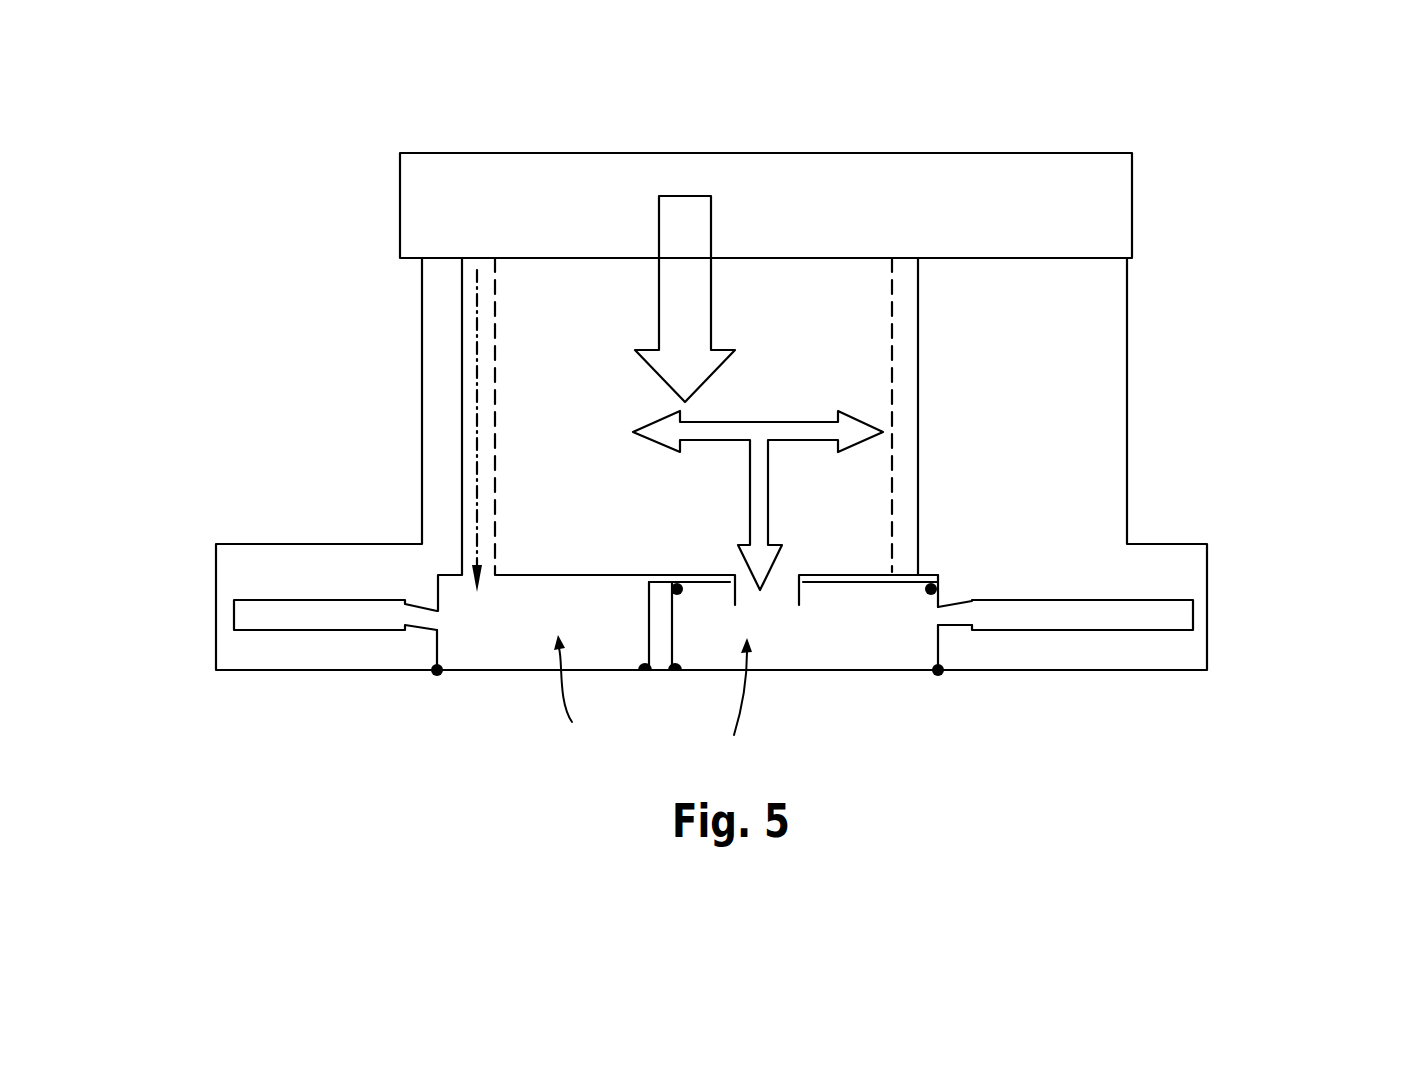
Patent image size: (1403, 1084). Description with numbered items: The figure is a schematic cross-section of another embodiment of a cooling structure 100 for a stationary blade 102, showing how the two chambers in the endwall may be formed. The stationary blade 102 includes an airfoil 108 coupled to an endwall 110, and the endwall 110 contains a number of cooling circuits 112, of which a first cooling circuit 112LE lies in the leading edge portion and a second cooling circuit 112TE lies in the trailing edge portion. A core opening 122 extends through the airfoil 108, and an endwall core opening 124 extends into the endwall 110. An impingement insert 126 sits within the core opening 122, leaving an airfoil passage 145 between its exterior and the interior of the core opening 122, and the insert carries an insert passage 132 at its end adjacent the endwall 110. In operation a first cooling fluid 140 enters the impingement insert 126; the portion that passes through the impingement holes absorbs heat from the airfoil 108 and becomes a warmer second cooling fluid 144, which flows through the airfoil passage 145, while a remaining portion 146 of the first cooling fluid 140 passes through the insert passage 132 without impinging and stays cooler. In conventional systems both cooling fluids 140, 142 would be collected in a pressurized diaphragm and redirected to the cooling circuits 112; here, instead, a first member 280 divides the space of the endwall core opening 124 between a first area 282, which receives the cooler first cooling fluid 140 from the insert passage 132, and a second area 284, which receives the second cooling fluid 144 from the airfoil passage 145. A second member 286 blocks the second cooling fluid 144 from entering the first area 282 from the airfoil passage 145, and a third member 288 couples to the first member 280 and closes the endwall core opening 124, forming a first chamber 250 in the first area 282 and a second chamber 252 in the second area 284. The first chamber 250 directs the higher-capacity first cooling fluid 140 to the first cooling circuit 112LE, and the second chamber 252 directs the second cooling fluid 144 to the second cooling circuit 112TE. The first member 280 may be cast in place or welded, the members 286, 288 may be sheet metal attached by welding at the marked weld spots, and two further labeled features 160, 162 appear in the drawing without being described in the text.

The cooling structure 100 is at (359, 501).
The stationary blade 102 is at (392, 112).
The airfoil 108 is at (1072, 362).
The endwall 110 is at (276, 563).
The cooling circuits 112 is at (710, 612).
The first cooling circuit 112LE is at (245, 611).
The second cooling circuit 112TE is at (1162, 613).
The core opening 122 is at (928, 301).
The endwall core opening 124 is at (940, 640).
The impingement insert 126 is at (912, 413).
The insert passage 132 is at (802, 595).
The first cooling fluid 140 is at (681, 222).
The cooling fluid 142 is at (1058, 223).
The second cooling fluid 144 is at (478, 400).
The airfoil passage 145 is at (905, 512).
The remaining portion of first cooling fluid 146 is at (762, 558).
The leading hinge point 160 is at (432, 621).
The trailing flap 162 is at (965, 613).
The first chamber 250 is at (768, 655).
The second chamber 252 is at (525, 653).
The first member 280 is at (657, 643).
The first area 282 is at (729, 703).
The second area 284 is at (577, 698).
The second member 286 is at (712, 582).
The third member 288 is at (813, 667).